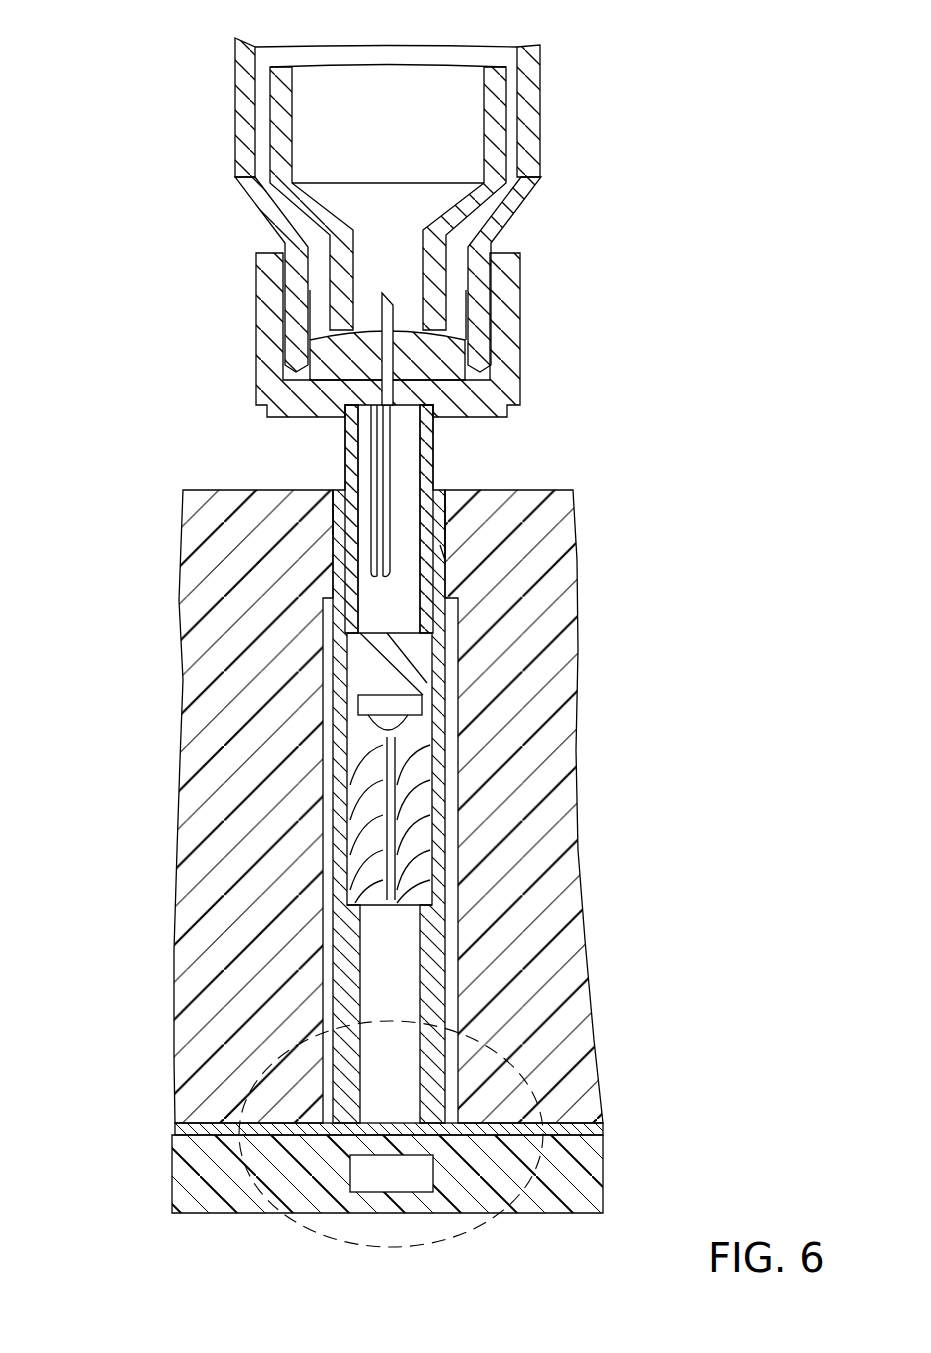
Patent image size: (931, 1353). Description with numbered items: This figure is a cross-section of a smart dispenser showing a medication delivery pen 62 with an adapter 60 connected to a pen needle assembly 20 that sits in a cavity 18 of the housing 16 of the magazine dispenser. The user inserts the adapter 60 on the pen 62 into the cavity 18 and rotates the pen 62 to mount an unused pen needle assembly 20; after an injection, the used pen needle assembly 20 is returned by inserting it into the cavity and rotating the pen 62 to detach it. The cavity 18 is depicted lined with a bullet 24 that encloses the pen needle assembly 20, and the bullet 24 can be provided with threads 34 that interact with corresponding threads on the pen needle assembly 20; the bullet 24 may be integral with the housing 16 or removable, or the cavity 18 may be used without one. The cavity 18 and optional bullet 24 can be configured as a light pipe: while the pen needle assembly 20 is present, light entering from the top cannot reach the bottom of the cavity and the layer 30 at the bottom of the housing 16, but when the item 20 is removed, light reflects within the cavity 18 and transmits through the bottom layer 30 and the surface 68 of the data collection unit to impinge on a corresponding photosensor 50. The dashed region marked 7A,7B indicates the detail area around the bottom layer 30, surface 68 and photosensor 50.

The housing 16 is at (535, 490).
The cavity 18 is at (333, 550).
The pen needle assembly 20 is at (440, 578).
The bullet 24 is at (335, 490).
The layer 30 is at (590, 1125).
The threads 34 is at (408, 770).
The photosensor 50 is at (405, 1170).
The adapter 60 is at (513, 325).
The medication delivery pen 62 is at (543, 97).
The surface 68 is at (565, 1178).
The detail view region 7A,7B is at (262, 1082).